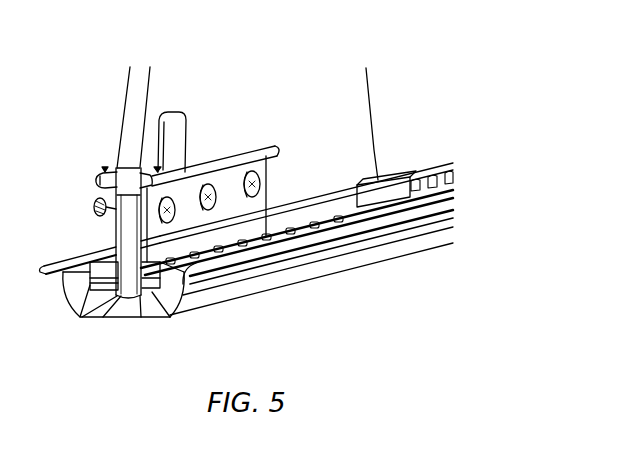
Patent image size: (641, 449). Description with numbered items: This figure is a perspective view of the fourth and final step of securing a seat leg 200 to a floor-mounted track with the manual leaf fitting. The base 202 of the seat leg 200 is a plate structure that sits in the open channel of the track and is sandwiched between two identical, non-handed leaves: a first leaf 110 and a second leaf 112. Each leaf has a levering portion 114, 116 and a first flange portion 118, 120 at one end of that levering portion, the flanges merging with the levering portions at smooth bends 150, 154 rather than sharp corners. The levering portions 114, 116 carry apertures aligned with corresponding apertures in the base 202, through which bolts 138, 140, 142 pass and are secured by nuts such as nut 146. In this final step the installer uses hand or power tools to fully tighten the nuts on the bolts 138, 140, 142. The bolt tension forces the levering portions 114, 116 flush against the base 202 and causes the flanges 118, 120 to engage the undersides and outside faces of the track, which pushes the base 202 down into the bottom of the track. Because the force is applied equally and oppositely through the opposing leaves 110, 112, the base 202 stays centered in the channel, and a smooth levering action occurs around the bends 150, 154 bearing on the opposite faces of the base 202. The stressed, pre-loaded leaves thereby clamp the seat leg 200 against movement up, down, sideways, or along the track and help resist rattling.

The seat leg 200 is at (132, 137).
The first leaf 110 is at (105, 166).
The second leaf 112 is at (168, 133).
The levering portion 114 is at (108, 242).
The levering portion 116 is at (186, 298).
The first flange portion 118 is at (82, 317).
The first flange portion 120 is at (160, 314).
The bolt 138 is at (172, 216).
The bolt 140 is at (212, 203).
The bolt 142 is at (256, 190).
The nut 146 is at (97, 219).
The smooth bend 150 is at (65, 281).
The smooth bend 154 is at (137, 300).
The base 202 is at (120, 298).